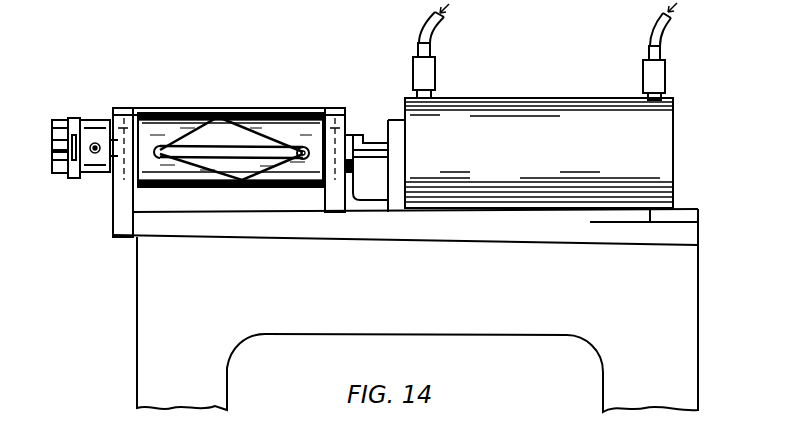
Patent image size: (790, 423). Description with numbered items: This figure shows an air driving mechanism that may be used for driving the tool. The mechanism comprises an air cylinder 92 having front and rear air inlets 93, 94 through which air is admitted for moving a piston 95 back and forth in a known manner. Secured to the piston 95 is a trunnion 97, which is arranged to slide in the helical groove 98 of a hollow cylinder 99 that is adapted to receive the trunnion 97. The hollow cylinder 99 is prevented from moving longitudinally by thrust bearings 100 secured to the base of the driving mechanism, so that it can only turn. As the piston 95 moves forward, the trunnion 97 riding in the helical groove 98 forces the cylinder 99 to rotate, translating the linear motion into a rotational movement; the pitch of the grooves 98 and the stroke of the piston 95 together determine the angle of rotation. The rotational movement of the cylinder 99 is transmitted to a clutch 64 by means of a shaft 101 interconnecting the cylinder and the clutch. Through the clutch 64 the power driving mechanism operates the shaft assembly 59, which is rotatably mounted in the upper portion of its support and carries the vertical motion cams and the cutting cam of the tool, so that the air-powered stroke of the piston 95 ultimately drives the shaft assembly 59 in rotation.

The clutch 64 is at (56, 118).
The shaft assembly 59 is at (92, 118).
The thrust bearings 100 is at (125, 108).
The shaft 101 is at (110, 182).
The hollow cylinder 99 is at (187, 190).
The helical groove 98 is at (267, 190).
The trunnion 97 is at (305, 190).
The piston 95 is at (375, 166).
The air cylinder 92 is at (670, 145).
The front air inlet 93 is at (417, 72).
The rear air inlet 94 is at (668, 77).